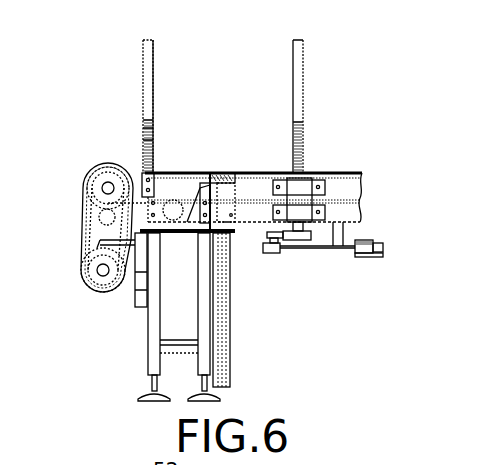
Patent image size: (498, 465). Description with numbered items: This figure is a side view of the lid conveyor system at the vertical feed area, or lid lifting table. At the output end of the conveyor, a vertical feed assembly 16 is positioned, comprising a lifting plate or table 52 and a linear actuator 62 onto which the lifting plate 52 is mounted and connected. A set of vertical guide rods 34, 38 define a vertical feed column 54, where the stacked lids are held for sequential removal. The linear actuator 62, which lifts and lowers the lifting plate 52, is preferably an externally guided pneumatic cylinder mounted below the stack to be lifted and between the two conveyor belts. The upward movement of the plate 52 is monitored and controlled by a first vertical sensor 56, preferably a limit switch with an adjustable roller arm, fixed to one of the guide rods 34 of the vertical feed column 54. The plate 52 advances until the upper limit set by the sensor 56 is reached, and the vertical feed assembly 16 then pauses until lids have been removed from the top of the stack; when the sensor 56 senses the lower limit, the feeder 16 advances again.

The vertical feed assembly 16 is at (258, 285).
The vertical guide rod 34 is at (143, 60).
The vertical guide rod 38 is at (303, 100).
The lifting plate 52 is at (223, 172).
The vertical feed column 54 is at (237, 57).
The first vertical sensor 56 is at (153, 135).
The linear actuator 62 is at (230, 330).